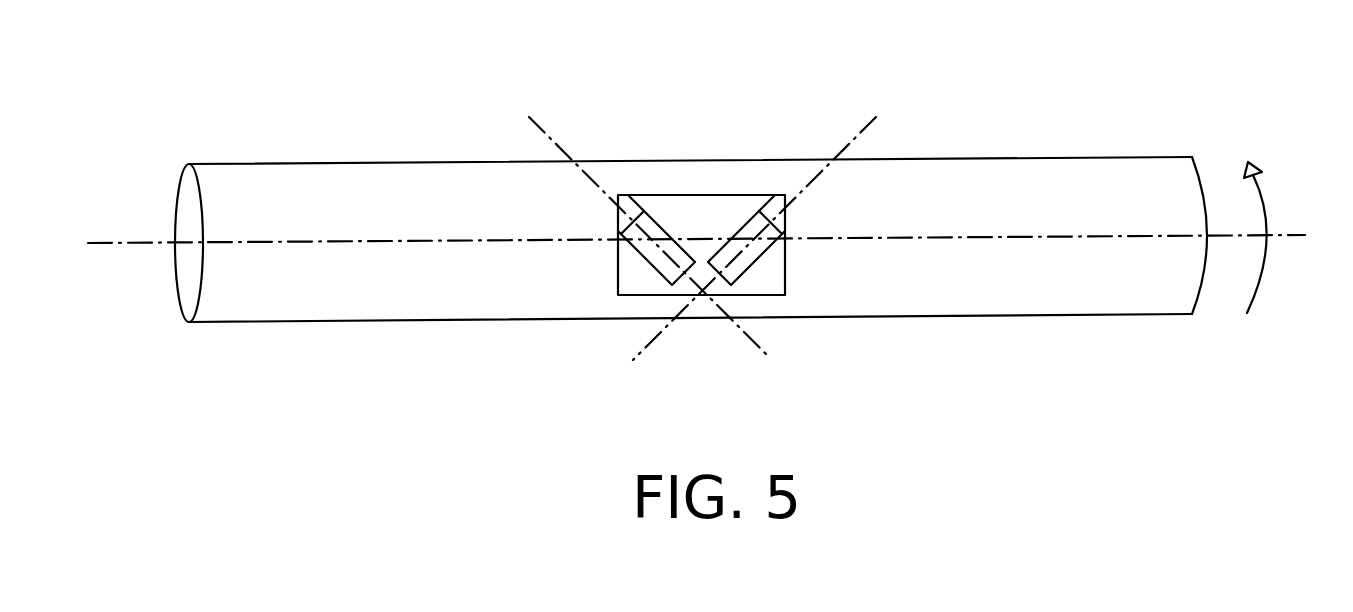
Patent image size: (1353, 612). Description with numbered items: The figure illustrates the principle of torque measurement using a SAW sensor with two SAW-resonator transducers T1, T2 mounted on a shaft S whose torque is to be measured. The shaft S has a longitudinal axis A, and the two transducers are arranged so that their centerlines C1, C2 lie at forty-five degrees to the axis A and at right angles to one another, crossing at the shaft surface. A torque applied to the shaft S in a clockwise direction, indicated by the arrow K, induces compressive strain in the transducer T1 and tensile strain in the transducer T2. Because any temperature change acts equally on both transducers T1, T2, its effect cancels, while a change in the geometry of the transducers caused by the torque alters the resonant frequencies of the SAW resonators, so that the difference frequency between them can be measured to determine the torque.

The shaft S is at (358, 200).
The longitudinal axis A is at (700, 240).
The SAW-resonator transducer T1 is at (771, 198).
The SAW-resonator transducer T2 is at (632, 198).
The centerline C1 is at (612, 372).
The centerline C2 is at (797, 386).
The arrow K is at (1262, 170).